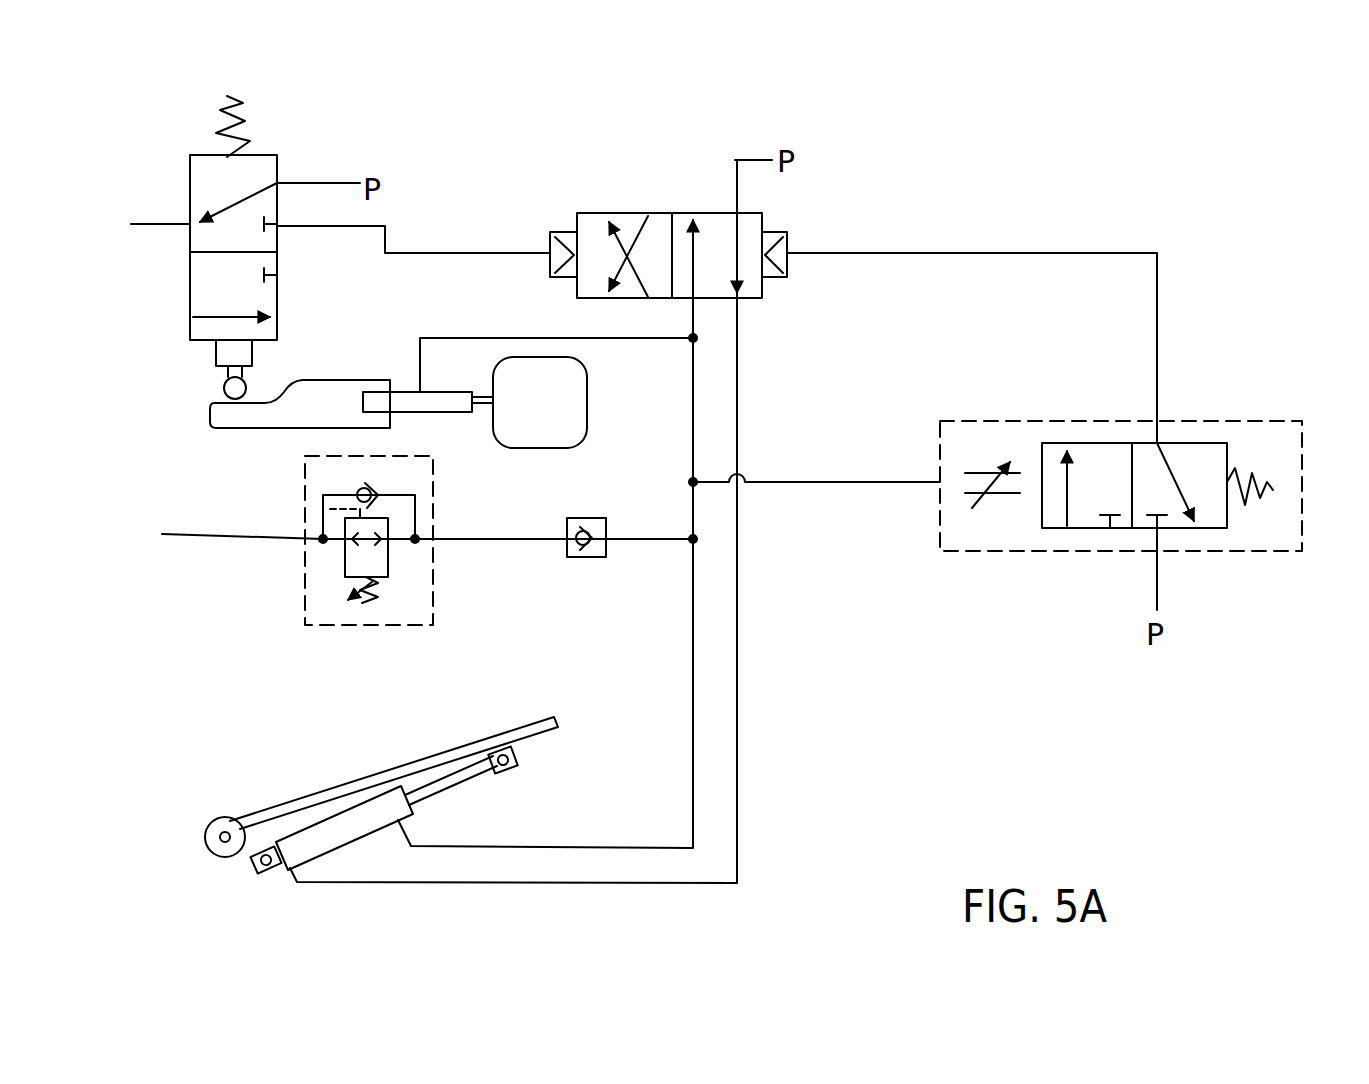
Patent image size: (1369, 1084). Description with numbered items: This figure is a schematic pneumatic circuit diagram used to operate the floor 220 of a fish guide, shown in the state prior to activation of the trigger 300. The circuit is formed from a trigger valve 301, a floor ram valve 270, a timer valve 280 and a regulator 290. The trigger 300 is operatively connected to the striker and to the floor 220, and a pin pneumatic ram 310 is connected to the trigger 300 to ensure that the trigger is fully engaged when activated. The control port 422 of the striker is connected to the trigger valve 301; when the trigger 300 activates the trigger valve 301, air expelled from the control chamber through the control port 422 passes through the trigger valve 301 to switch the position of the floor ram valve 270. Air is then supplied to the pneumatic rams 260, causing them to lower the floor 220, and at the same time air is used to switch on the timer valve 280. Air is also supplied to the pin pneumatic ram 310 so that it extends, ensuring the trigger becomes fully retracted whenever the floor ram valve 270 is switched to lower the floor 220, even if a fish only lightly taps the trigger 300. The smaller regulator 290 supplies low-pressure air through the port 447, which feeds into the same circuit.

The trigger valve 301 is at (155, 151).
The control port 422 is at (119, 223).
The trigger 300 is at (233, 414).
The pin pneumatic ram 310 is at (406, 400).
The floor ram valve 270 is at (650, 154).
The timer valve 280 is at (1221, 400).
The regulator 290 is at (494, 518).
The port 447 is at (256, 540).
The floor 220 is at (338, 788).
The pneumatic rams 260 is at (328, 837).